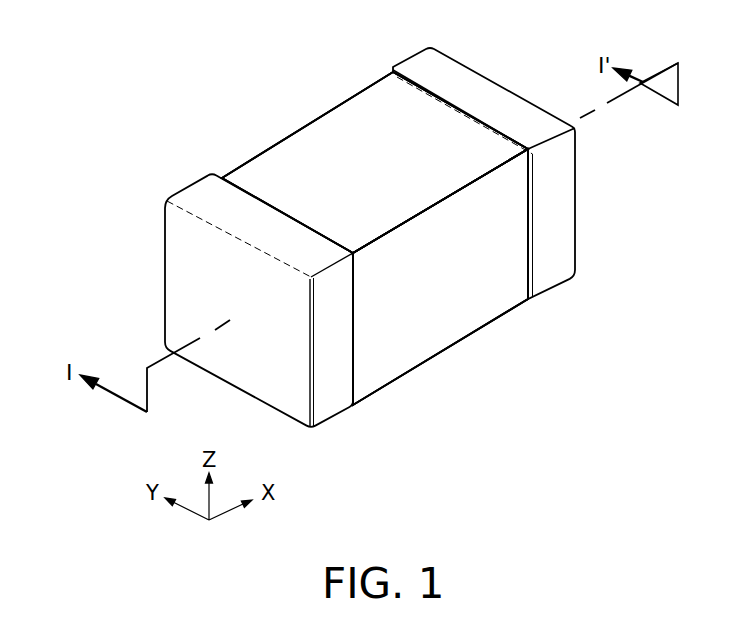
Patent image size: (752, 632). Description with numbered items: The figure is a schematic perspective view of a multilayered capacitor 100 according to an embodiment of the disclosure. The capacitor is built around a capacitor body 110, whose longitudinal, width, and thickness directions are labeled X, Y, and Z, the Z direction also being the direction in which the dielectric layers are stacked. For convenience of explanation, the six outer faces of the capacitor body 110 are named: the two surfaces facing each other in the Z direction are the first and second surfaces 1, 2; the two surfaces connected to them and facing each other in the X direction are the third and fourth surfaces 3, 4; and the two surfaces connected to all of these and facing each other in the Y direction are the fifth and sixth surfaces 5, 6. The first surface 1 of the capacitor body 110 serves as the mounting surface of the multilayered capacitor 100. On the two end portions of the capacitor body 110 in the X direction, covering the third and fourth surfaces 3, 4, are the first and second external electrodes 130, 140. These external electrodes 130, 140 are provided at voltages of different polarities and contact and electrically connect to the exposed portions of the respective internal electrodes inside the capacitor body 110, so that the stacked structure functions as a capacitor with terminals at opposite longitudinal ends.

The multilayered capacitor 100 is at (228, 27).
The capacitor body 110 is at (447, 130).
The first external electrode 130 is at (188, 263).
The second external electrode 140 is at (560, 233).
The first surface 1 is at (374, 333).
The second surface 2 is at (383, 127).
The third surface 3 is at (188, 313).
The fourth surface 4 is at (562, 183).
The fifth surface 5 is at (325, 155).
The sixth surface 6 is at (427, 302).